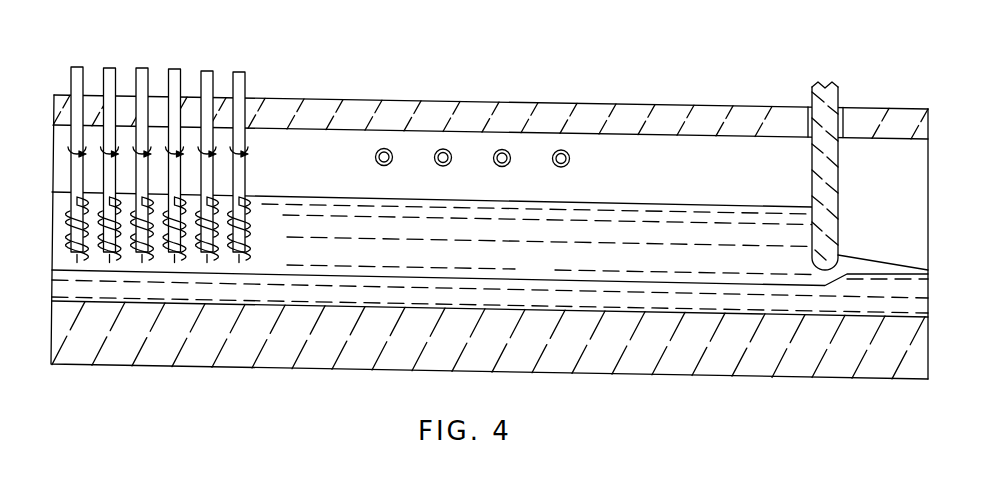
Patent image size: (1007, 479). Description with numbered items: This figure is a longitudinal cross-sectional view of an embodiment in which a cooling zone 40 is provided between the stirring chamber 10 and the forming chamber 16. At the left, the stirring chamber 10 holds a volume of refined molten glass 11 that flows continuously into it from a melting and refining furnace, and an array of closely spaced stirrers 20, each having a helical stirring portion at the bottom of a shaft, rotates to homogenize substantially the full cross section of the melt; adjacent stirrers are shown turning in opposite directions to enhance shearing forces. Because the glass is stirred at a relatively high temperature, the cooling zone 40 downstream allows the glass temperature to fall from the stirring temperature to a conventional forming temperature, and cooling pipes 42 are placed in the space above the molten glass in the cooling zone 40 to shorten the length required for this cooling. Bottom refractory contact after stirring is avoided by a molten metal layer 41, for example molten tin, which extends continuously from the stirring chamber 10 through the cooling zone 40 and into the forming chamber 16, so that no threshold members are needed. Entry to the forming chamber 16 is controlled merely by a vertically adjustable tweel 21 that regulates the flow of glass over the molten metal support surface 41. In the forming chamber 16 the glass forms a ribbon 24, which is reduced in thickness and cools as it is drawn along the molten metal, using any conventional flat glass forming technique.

The stirring chamber 10 is at (263, 94).
The refined molten glass 11 is at (342, 197).
The forming chamber 16 is at (905, 109).
The stirrers 20 is at (203, 70).
The tweel 21 is at (812, 172).
The glass ribbon 24 is at (914, 268).
The cooling zone 40 is at (593, 102).
The molten metal layer 41 is at (570, 280).
The cooling pipes 42 is at (567, 164).